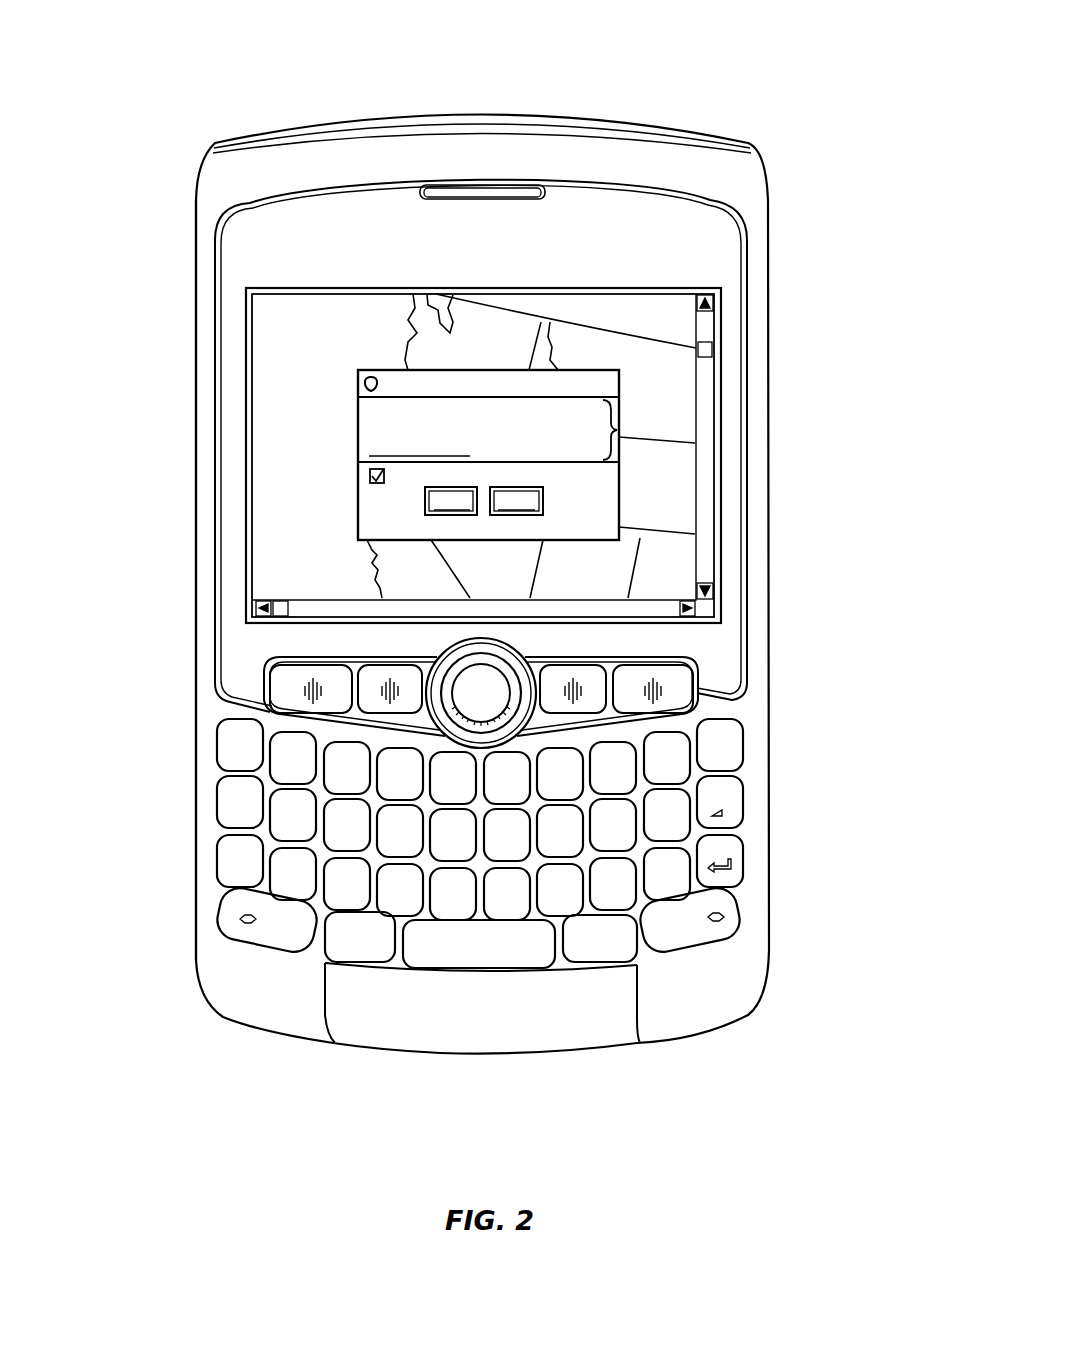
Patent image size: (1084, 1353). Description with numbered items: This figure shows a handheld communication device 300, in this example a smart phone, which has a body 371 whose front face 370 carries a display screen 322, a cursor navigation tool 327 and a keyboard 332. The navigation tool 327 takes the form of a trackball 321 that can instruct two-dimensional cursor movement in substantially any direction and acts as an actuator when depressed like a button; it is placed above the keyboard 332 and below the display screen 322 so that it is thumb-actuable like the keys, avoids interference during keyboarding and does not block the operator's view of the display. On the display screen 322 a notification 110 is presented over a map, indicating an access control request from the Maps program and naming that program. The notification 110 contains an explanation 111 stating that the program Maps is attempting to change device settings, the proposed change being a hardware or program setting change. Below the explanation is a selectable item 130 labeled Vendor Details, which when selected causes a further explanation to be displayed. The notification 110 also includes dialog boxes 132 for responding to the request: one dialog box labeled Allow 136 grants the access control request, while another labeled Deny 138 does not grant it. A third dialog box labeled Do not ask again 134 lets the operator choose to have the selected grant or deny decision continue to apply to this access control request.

The communication device 300 is at (690, 48).
The display screen 322 is at (355, 315).
The body 371 is at (188, 205).
The front face 370 is at (760, 236).
The notification 110 is at (358, 426).
The explanation 111 is at (618, 429).
The selectable item 130 is at (358, 446).
The Do not ask again dialog box 134 is at (358, 476).
The dialog boxes 132 is at (417, 503).
The Allow dialog box 136 is at (430, 511).
The Deny dialog box 138 is at (540, 511).
The cursor navigation tool 327 is at (433, 731).
The trackball 321 is at (495, 696).
The keyboard 332 is at (484, 972).